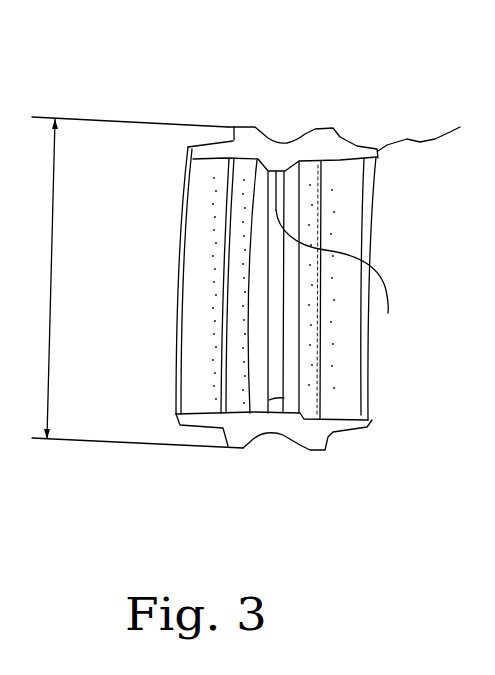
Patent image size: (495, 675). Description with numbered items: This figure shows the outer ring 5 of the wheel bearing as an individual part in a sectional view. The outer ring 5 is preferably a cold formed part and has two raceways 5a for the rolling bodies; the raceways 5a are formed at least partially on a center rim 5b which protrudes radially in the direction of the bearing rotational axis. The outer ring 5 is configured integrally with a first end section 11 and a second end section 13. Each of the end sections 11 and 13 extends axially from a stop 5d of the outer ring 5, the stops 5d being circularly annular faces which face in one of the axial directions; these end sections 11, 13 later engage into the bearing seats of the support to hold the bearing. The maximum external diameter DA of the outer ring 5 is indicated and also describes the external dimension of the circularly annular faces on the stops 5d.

The outer ring 5 is at (368, 62).
The raceways 5a is at (400, 188).
The center rim 5b is at (403, 300).
The stops 5d is at (373, 108).
The first end section 11 is at (465, 145).
The second end section 13 is at (206, 152).
The maximum external diameter DA is at (69, 279).